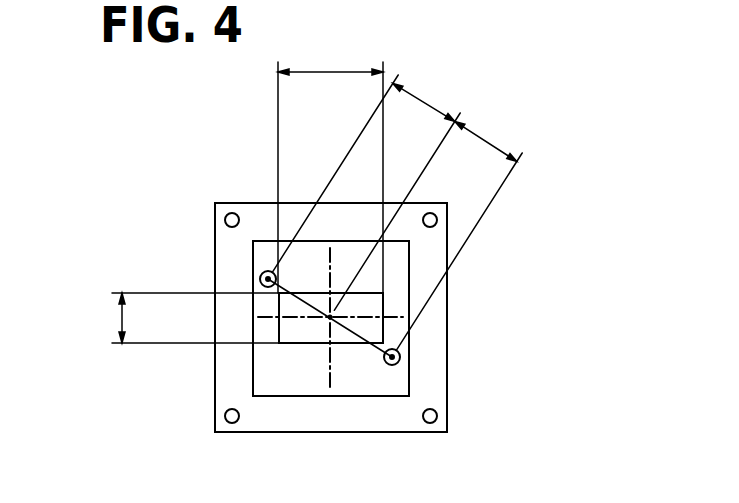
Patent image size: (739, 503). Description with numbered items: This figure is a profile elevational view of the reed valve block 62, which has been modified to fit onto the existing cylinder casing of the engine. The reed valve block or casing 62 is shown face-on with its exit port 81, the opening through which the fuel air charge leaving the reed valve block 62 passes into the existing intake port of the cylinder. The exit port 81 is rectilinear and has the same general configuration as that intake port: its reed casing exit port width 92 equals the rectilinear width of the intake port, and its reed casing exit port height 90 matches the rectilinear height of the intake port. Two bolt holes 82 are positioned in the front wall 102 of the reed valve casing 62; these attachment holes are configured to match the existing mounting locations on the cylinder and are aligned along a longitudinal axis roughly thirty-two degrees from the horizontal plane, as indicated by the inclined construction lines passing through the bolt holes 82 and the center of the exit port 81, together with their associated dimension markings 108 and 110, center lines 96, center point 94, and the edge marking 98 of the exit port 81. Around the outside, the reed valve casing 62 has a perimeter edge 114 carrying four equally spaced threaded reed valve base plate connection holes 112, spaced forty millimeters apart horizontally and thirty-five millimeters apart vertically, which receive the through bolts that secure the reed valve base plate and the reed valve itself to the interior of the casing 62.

The reed valve block 62 is at (255, 210).
The exit port 81 is at (372, 307).
The bolt holes 82 is at (262, 281).
The reed casing exit port height 90 is at (120, 318).
The reed casing exit port width 92 is at (332, 72).
The center point 94 is at (328, 318).
The center lines 96 is at (333, 368).
The window side edge 98 is at (294, 320).
The front wall 102 is at (395, 275).
The first pin offset dimension 108 is at (427, 100).
The second pin offset dimension 110 is at (490, 137).
The reed valve base plate connection holes 112 is at (223, 222).
The perimeter edge 114 is at (215, 248).